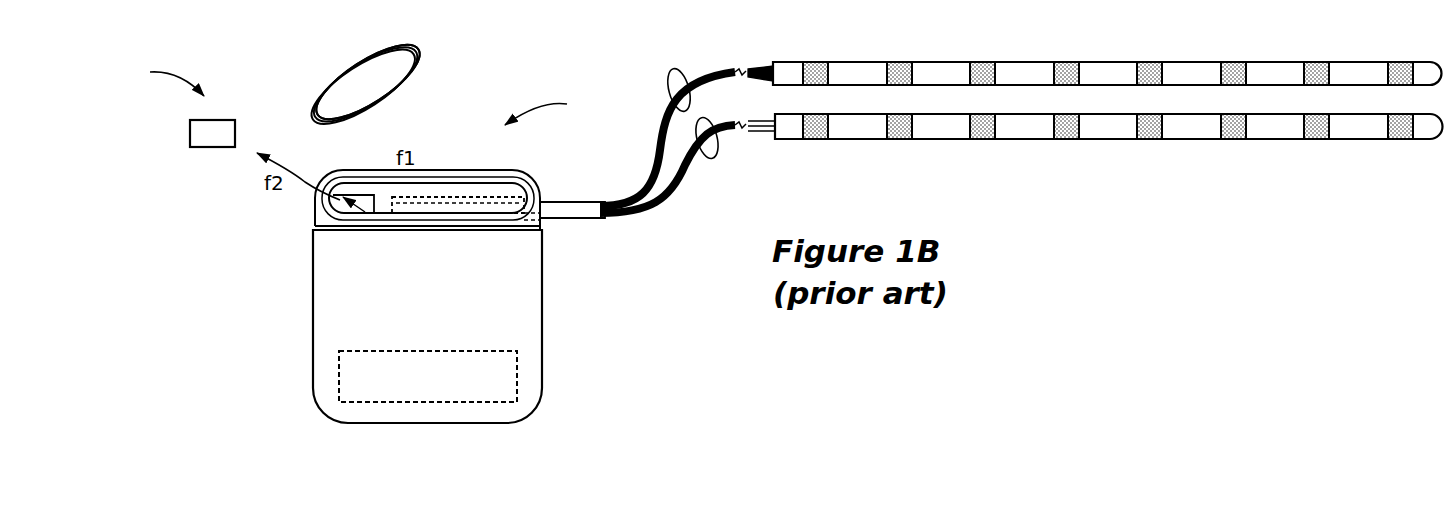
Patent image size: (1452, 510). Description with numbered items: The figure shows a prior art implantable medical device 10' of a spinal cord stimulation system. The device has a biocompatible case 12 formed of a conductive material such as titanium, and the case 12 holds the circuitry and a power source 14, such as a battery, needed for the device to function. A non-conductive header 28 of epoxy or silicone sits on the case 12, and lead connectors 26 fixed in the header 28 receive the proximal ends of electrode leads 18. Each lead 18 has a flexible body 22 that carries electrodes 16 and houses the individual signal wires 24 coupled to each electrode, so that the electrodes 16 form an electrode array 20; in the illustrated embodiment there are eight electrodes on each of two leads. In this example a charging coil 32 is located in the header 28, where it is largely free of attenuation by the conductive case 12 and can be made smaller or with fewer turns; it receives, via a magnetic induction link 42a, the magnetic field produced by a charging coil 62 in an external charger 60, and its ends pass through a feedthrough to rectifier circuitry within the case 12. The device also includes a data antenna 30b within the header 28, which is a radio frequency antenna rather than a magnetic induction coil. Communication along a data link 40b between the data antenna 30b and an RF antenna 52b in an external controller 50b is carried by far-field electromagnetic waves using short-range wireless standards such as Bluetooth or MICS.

The implantable medical device 10' is at (552, 109).
The device case 12 is at (544, 275).
The power source 14 is at (507, 380).
The electrodes 16 is at (986, 62).
The electrode lead 18 is at (957, 150).
The electrode array 20 is at (1167, 180).
The flexible body 22 is at (866, 62).
The signal wires 24 is at (672, 80).
The lead connector 26 is at (541, 194).
The header 28 is at (318, 218).
The data antenna 30b is at (370, 207).
The charging coil 32 is at (503, 182).
The data link 40b is at (298, 173).
The magnetic induction link 42a is at (477, 183).
The external controller 50b is at (156, 80).
The RF antenna 52b is at (198, 134).
The external charger 60 is at (415, 35).
The charging coil 62 is at (360, 62).